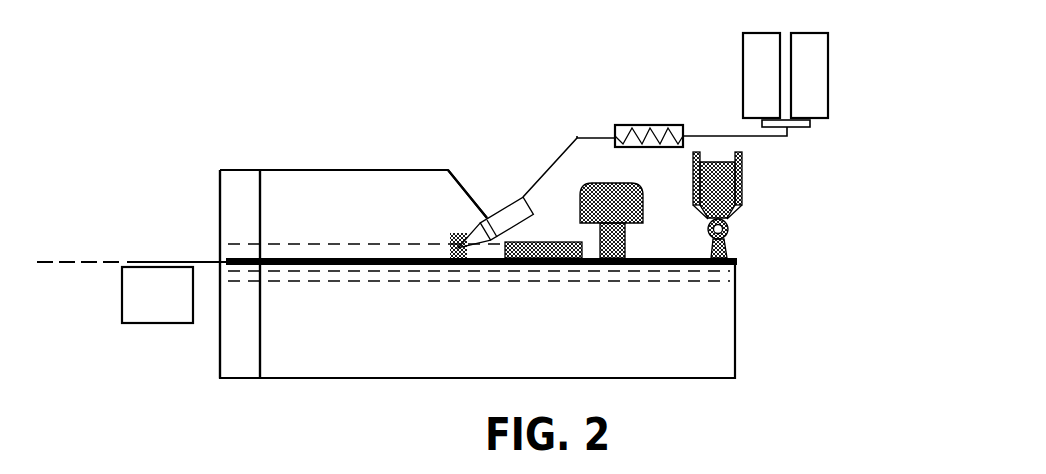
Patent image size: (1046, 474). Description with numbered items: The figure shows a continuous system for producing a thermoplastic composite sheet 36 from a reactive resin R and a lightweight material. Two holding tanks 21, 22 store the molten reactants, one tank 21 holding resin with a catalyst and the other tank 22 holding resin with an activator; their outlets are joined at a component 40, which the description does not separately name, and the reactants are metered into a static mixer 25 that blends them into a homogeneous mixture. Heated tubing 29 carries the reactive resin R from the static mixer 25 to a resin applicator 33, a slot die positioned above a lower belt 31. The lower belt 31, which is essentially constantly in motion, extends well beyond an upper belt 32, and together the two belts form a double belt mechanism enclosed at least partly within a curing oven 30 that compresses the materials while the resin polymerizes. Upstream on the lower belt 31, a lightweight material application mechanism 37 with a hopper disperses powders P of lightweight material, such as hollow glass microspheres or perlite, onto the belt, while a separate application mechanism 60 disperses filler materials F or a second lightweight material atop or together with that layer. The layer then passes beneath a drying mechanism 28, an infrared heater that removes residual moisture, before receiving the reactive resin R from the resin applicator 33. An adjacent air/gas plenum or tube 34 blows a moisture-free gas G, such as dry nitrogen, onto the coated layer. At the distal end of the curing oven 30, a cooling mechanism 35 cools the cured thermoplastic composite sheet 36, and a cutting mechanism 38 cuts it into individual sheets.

The holding tank 21 is at (743, 58).
The holding tank 22 is at (828, 58).
The static mixer 25 is at (648, 125).
The drying mechanism 28 is at (563, 267).
The tubing 29 is at (577, 138).
The curing oven 30 is at (353, 362).
The lower belt 31 is at (413, 285).
The upper belt 32 is at (322, 238).
The resin applicator 33 is at (510, 203).
The air/gas plenum or tube 34 is at (457, 232).
The cooling mechanism 35 is at (243, 180).
The thermoplastic composite sheet 36 is at (200, 260).
The lightweight material application mechanism 37 is at (743, 183).
The cutting mechanism 38 is at (160, 305).
The manifold 40 is at (805, 125).
The separate application mechanism 60 is at (572, 188).
The moisture-free gas G is at (440, 237).
The filler materials F is at (632, 238).
The powders P is at (745, 249).
The reactive resin R is at (476, 254).